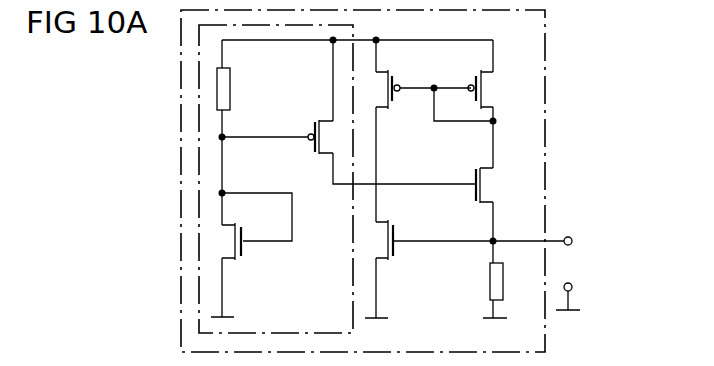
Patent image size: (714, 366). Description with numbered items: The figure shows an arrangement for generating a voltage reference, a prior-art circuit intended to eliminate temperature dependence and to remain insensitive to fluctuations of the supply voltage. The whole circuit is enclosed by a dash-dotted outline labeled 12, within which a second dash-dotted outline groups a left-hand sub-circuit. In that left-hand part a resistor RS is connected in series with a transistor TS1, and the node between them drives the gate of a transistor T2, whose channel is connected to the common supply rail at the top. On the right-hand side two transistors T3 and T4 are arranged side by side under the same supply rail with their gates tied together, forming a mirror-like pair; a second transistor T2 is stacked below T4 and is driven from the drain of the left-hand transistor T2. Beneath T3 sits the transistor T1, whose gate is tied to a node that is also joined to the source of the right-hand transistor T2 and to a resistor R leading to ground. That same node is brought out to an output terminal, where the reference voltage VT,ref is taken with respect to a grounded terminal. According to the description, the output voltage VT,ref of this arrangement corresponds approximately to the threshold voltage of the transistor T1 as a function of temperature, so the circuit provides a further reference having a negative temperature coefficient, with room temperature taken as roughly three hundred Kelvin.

The reference voltage generating circuit 12 is at (545, 98).
The resistor RS is at (230, 91).
The transistor T2 is at (313, 147).
The transistor T3 is at (399, 84).
The transistor T4 is at (484, 90).
The transistor T1 is at (396, 232).
The transistor TS1 is at (243, 250).
The resistor R is at (490, 280).
The reference voltage VT,ref is at (589, 283).